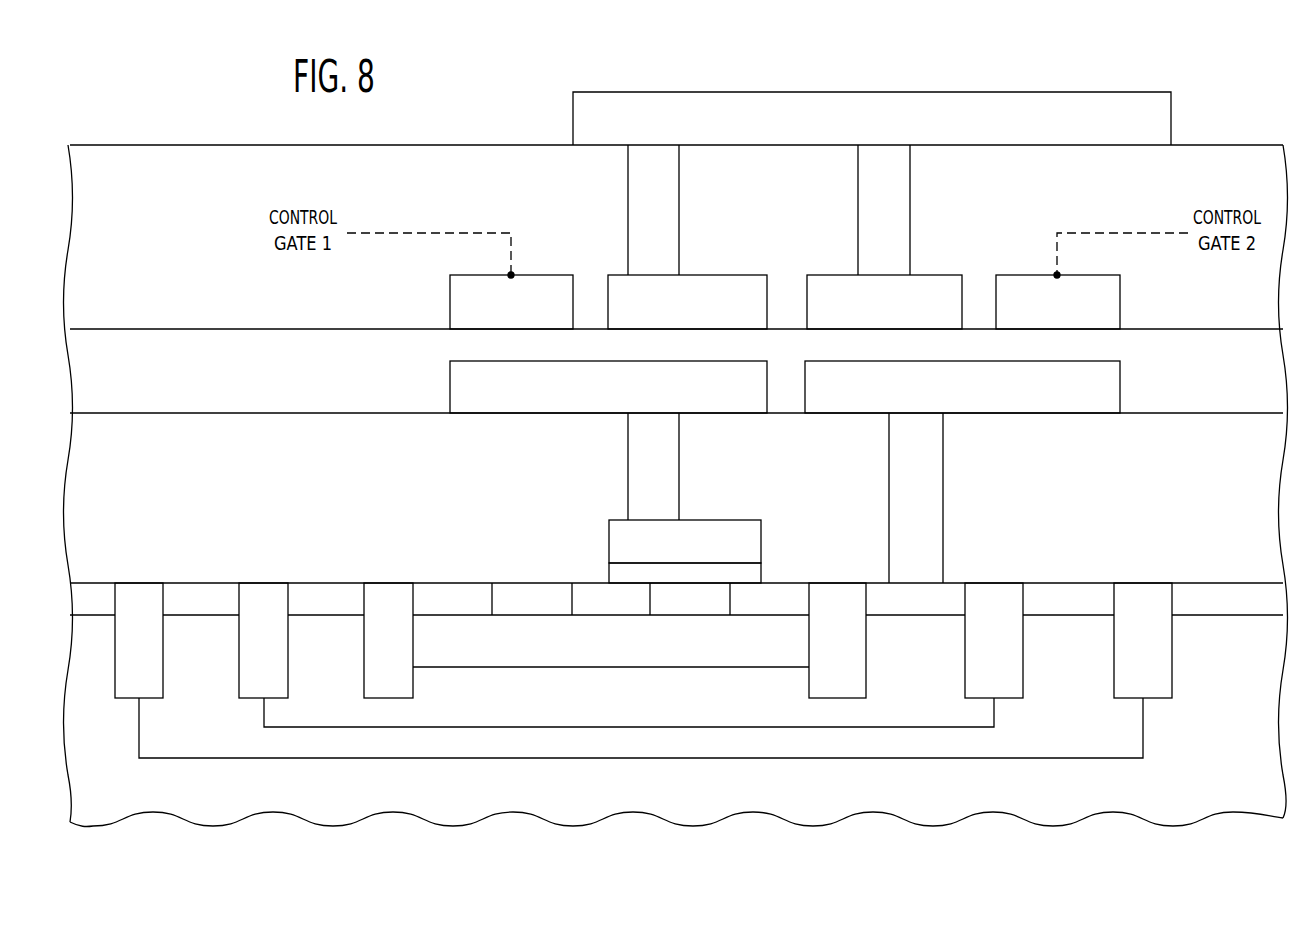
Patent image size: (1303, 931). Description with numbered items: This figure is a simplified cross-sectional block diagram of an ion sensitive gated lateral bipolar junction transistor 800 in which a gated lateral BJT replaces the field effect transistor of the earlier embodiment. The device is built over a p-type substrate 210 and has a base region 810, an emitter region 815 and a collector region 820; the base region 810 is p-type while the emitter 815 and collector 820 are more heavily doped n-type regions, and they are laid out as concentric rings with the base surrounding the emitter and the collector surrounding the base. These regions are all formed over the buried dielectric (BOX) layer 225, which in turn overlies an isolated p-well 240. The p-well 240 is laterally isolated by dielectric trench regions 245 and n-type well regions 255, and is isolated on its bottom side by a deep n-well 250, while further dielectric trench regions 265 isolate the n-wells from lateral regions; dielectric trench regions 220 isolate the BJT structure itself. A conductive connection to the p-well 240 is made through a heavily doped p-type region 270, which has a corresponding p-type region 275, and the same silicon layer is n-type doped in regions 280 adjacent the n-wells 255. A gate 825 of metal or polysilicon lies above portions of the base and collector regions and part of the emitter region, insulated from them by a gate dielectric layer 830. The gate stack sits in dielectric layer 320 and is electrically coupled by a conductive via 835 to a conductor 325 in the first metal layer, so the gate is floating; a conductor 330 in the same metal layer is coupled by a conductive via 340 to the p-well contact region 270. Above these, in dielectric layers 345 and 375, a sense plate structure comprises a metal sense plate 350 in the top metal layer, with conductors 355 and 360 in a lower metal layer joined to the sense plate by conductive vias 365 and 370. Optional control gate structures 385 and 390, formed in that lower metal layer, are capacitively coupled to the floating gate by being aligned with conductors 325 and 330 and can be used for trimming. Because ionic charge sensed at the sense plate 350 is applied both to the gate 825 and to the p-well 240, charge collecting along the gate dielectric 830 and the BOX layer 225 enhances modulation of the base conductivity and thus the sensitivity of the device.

The gated lateral bipolar junction transistor 800 is at (901, 49).
The metal sense plate 350 is at (824, 126).
The dielectric layer 375 is at (111, 240).
The dielectric layer 345 is at (111, 382).
The dielectric layer 320 is at (111, 507).
The conductive via 365 is at (668, 194).
The conductive via 370 is at (900, 194).
The control gate structure 385 is at (495, 312).
The conductor 355 is at (671, 312).
The conductor 360 is at (868, 312).
The control gate structure 390 is at (1042, 312).
The conductor 325 is at (584, 397).
The conductor 330 is at (947, 397).
The conductive via 835 is at (668, 464).
The conductive via 340 is at (932, 464).
The gate 825 is at (669, 553).
The dielectric layer 830 is at (755, 577).
The n-type doped region 280 is at (208, 592).
The p-type region 275 is at (328, 592).
The p-type region 270 is at (919, 607).
The dielectric trench region 265 is at (123, 661).
The dielectric trench region 245 is at (248, 661).
The dielectric trench region 220 is at (372, 661).
The n-type well region 255 is at (185, 679).
The collector region 820 is at (451, 607).
The base region 810 is at (527, 607).
The emitter region 815 is at (608, 607).
The buried dielectric layer 225 is at (566, 660).
The p-well 240 is at (732, 712).
The deep n-well 250 is at (904, 750).
The substrate 210 is at (1197, 789).